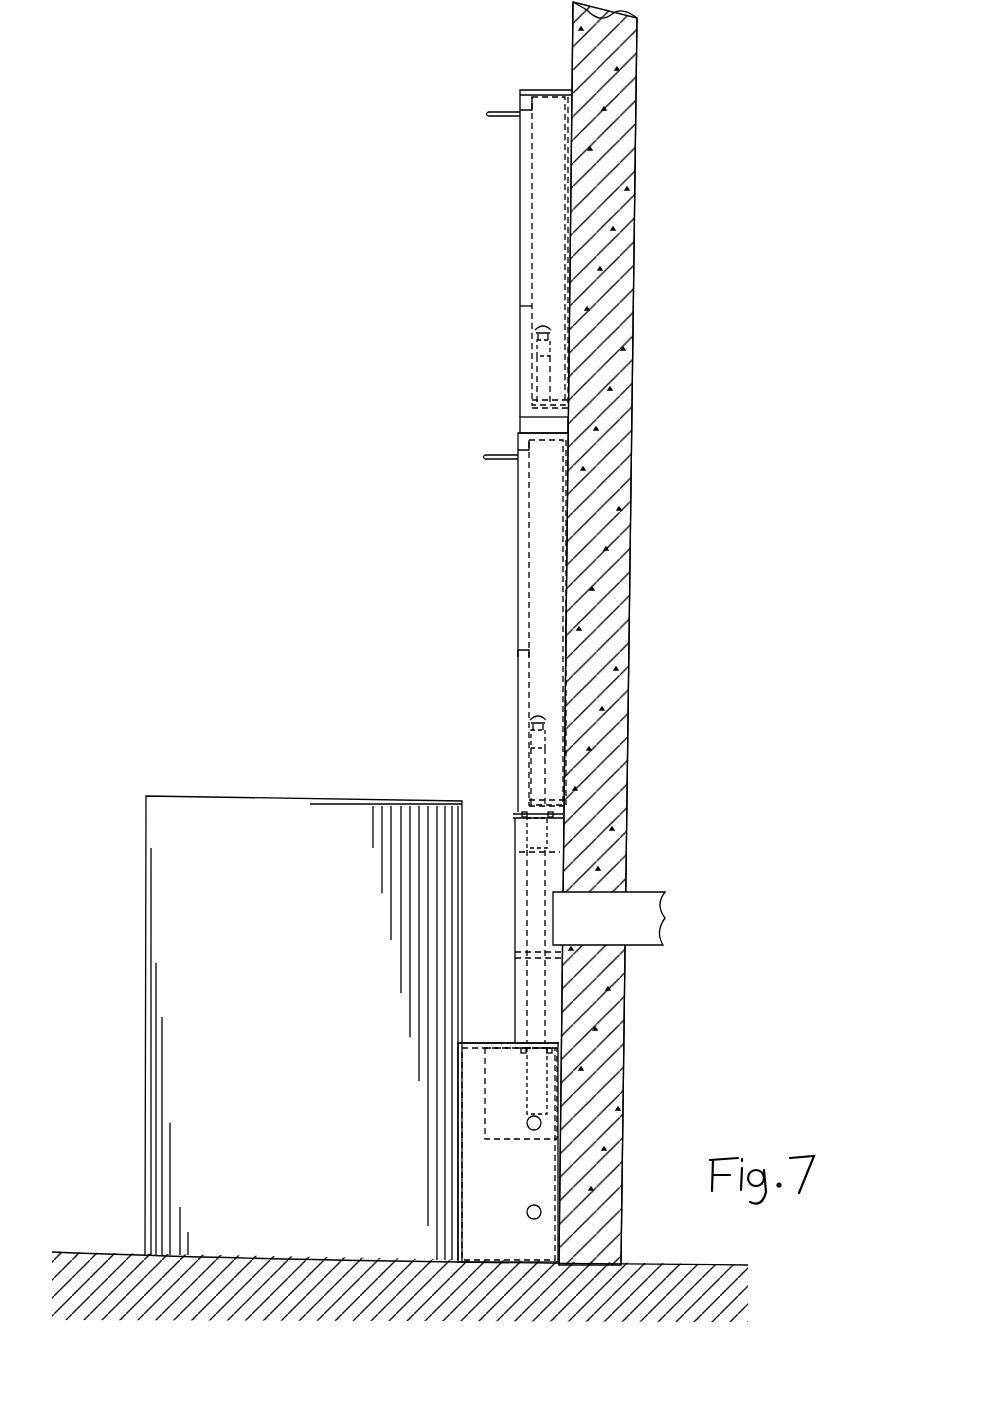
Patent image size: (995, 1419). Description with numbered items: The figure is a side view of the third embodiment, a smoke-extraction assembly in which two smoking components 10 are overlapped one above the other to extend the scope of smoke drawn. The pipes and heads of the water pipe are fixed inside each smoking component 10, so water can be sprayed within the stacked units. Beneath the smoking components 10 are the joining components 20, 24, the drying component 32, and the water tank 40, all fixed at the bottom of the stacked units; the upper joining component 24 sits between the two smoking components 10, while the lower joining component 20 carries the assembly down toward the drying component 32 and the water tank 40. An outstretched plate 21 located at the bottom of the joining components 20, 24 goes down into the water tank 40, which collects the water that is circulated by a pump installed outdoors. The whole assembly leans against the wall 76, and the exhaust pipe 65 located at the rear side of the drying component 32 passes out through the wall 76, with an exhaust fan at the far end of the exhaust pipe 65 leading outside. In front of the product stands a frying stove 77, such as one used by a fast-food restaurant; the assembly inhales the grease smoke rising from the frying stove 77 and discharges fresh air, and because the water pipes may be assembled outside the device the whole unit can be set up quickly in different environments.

The smoking component 10 is at (488, 234).
The joining component 24 is at (513, 418).
The wall 76 is at (620, 352).
The frying stove 77 is at (183, 785).
The drying component 32 is at (503, 836).
The joining component 20 is at (503, 917).
The exhaust pipe 65 is at (633, 904).
The water tank 40 is at (486, 1032).
The outstretched plate 21 is at (500, 1138).